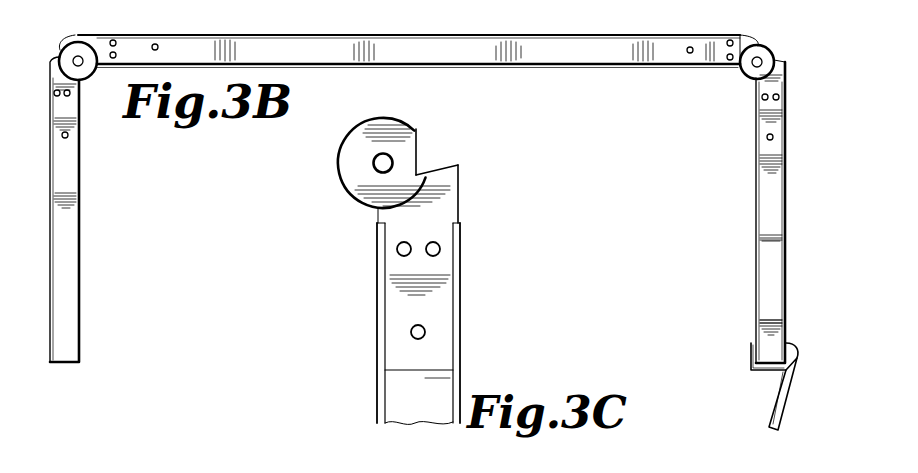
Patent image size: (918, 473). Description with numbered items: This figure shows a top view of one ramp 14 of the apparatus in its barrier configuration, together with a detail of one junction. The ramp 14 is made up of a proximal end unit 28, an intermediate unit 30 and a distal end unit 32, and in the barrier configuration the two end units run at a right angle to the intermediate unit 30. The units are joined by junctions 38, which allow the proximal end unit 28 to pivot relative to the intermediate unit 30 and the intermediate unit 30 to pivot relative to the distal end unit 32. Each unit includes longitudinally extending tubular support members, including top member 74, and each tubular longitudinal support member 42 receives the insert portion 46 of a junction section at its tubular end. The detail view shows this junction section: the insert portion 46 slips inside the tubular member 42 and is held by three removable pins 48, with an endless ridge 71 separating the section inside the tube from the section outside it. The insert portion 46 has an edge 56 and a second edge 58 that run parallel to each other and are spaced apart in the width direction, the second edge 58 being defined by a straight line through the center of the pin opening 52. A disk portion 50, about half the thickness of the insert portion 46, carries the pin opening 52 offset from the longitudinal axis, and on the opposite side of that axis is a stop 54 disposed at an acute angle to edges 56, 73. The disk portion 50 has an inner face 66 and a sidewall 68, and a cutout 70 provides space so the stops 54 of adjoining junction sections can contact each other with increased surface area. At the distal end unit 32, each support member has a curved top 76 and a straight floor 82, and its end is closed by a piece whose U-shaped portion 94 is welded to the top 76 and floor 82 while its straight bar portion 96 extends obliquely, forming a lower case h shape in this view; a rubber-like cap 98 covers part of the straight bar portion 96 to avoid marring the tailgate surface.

In FIG. 3B, the ramp 14 is at (290, 34).
In FIG. 3B, the proximal end unit 28 is at (49, 233).
In FIG. 3B, the intermediate unit 30 is at (629, 68).
In FIG. 3B, the distal end unit 32 is at (786, 142).
In FIG. 3B, the junction 38 is at (50, 64).
In FIG. 3C, the longitudinal support member 42 is at (460, 346).
In FIG. 3C, the insert portion 46 is at (440, 300).
In FIG. 3C, the removable pin 48 is at (460, 248).
In FIG. 3C, the disk portion 50 is at (350, 192).
In FIG. 3C, the pin opening 52 is at (388, 154).
In FIG. 3C, the stop 54 is at (445, 170).
In FIG. 3C, the edge 56 is at (441, 250).
In FIG. 3C, the second edge 58 is at (377, 275).
In FIG. 3C, the inner face 66 is at (352, 148).
In FIG. 3C, the sidewall 68 is at (358, 123).
In FIG. 3C, the cutout 70 is at (420, 149).
In FIG. 3C, the endless ridge 71 is at (377, 218).
In FIG. 3C, the edge 73 is at (460, 205).
In FIG. 3B, the top member 74 is at (786, 243).
In FIG. 3B, the curved top 76 is at (786, 310).
In FIG. 3B, the floor 82 is at (755, 330).
In FIG. 3B, the U-shaped portion 94 is at (757, 373).
In FIG. 3B, the straight bar portion 96 is at (795, 361).
In FIG. 3B, the cap 98 is at (781, 404).